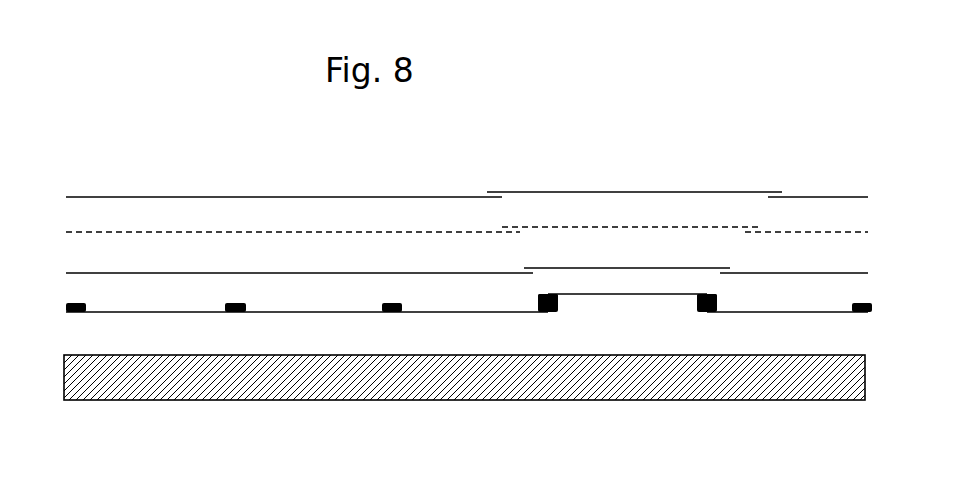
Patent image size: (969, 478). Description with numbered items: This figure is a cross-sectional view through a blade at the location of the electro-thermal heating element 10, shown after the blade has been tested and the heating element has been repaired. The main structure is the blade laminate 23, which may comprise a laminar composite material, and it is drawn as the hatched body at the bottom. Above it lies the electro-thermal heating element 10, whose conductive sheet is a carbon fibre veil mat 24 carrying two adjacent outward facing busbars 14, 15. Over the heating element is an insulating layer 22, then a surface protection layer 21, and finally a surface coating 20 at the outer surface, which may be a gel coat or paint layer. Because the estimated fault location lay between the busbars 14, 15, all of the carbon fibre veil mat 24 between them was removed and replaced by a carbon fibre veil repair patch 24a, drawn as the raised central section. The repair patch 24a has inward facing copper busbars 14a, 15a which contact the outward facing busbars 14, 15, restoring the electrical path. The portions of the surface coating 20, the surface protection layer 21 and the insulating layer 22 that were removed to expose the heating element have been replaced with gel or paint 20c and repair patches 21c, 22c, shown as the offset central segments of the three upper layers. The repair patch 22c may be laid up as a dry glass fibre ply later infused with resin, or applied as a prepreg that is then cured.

The electro-thermal heating element 10 is at (300, 296).
The surface coating 20 is at (135, 196).
The gel or paint 20c is at (523, 192).
The surface protection layer 21 is at (82, 231).
The repair patch 21c is at (566, 227).
The insulating layer 22 is at (90, 272).
The repair patch 22c is at (543, 268).
The blade laminate 23 is at (85, 353).
The carbon fibre veil mat 24 is at (332, 313).
The carbon fibre veil repair patch 24a is at (637, 292).
The busbar 14 is at (545, 312).
The inward facing copper busbar 14a is at (540, 297).
The busbar 15 is at (705, 314).
The inward facing copper busbar 15a is at (717, 296).